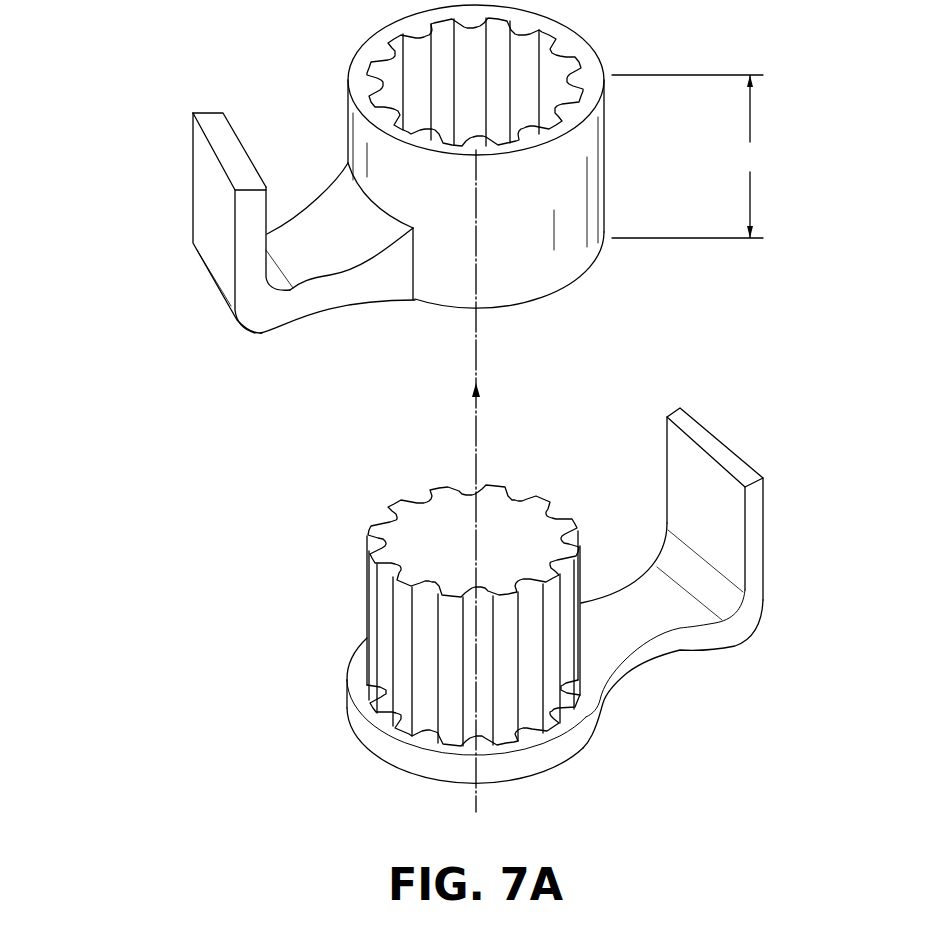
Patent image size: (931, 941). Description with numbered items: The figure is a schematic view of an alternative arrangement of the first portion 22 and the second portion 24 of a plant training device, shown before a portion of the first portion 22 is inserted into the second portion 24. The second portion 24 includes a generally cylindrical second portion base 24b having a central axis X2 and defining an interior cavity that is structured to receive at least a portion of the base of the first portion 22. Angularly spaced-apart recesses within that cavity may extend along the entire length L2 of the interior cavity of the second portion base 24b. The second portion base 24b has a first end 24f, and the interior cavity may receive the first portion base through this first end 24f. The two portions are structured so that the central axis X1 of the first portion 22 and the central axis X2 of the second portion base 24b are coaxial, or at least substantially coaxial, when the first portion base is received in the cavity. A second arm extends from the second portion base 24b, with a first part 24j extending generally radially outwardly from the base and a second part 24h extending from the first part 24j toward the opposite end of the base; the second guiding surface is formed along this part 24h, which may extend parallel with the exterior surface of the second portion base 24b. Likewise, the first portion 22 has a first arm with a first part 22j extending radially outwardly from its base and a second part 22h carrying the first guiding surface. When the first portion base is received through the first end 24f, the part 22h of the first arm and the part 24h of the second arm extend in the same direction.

The first portion 22 is at (528, 595).
The second part of the first arm 22h is at (680, 497).
The first part of the first arm 22j is at (668, 618).
The second portion 24 is at (401, 199).
The second portion base 24b is at (568, 235).
The first end of the second portion base 24f is at (572, 287).
The second part of the second arm 24h is at (207, 205).
The first part of the second arm 24j is at (323, 223).
The length of the second portion base interior cavity L2 is at (687, 156).
The central axis of the first portion X1 is at (478, 468).
The central axis of the second portion base X2 is at (476, 348).